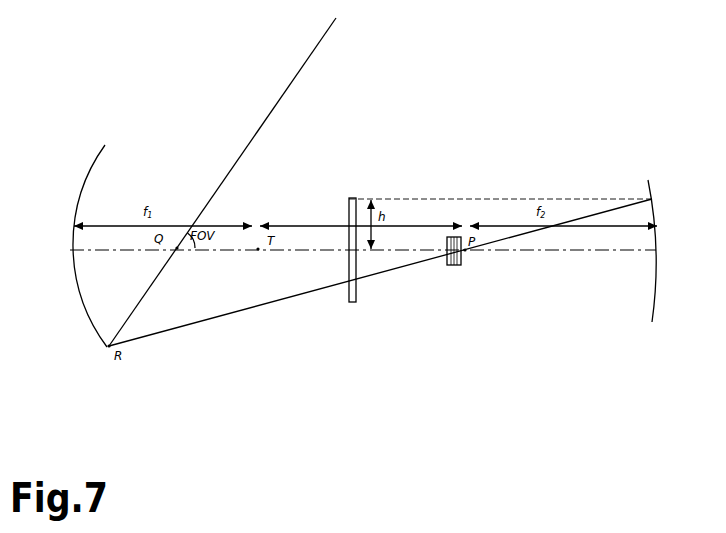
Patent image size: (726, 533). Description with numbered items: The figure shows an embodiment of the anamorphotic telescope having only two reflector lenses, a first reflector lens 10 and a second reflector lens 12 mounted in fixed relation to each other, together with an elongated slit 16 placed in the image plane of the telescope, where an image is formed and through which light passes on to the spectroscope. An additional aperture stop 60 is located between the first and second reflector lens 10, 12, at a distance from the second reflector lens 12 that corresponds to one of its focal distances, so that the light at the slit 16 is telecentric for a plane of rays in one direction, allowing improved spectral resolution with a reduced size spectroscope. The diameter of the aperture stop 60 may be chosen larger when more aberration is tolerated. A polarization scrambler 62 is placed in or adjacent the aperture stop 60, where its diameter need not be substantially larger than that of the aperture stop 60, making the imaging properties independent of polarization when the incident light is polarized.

The first reflector lens 10 is at (78, 303).
The second reflector lens 12 is at (655, 278).
The slit 16 is at (359, 307).
The aperture stop 60 is at (470, 270).
The polarization scrambler 62 is at (453, 265).